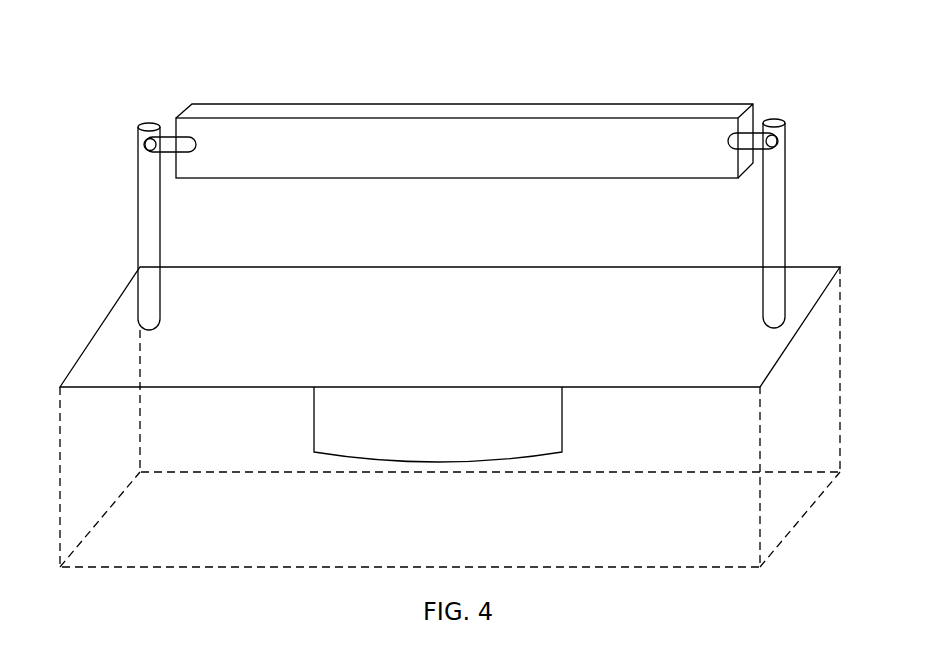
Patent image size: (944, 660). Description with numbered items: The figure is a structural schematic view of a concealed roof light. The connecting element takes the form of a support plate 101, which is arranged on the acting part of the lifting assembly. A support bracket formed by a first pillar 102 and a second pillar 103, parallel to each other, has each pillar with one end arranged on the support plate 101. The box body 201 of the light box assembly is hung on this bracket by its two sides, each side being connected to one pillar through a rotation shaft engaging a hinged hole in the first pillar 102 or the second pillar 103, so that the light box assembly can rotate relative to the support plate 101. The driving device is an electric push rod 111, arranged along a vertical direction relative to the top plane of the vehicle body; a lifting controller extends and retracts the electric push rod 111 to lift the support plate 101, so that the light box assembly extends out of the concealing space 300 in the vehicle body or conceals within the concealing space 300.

The support plate 101 is at (677, 365).
The first pillar 102 is at (158, 212).
The second pillar 103 is at (772, 222).
The electric push rod 111 is at (493, 435).
The box body 201 is at (472, 140).
The concealing space 300 is at (450, 417).